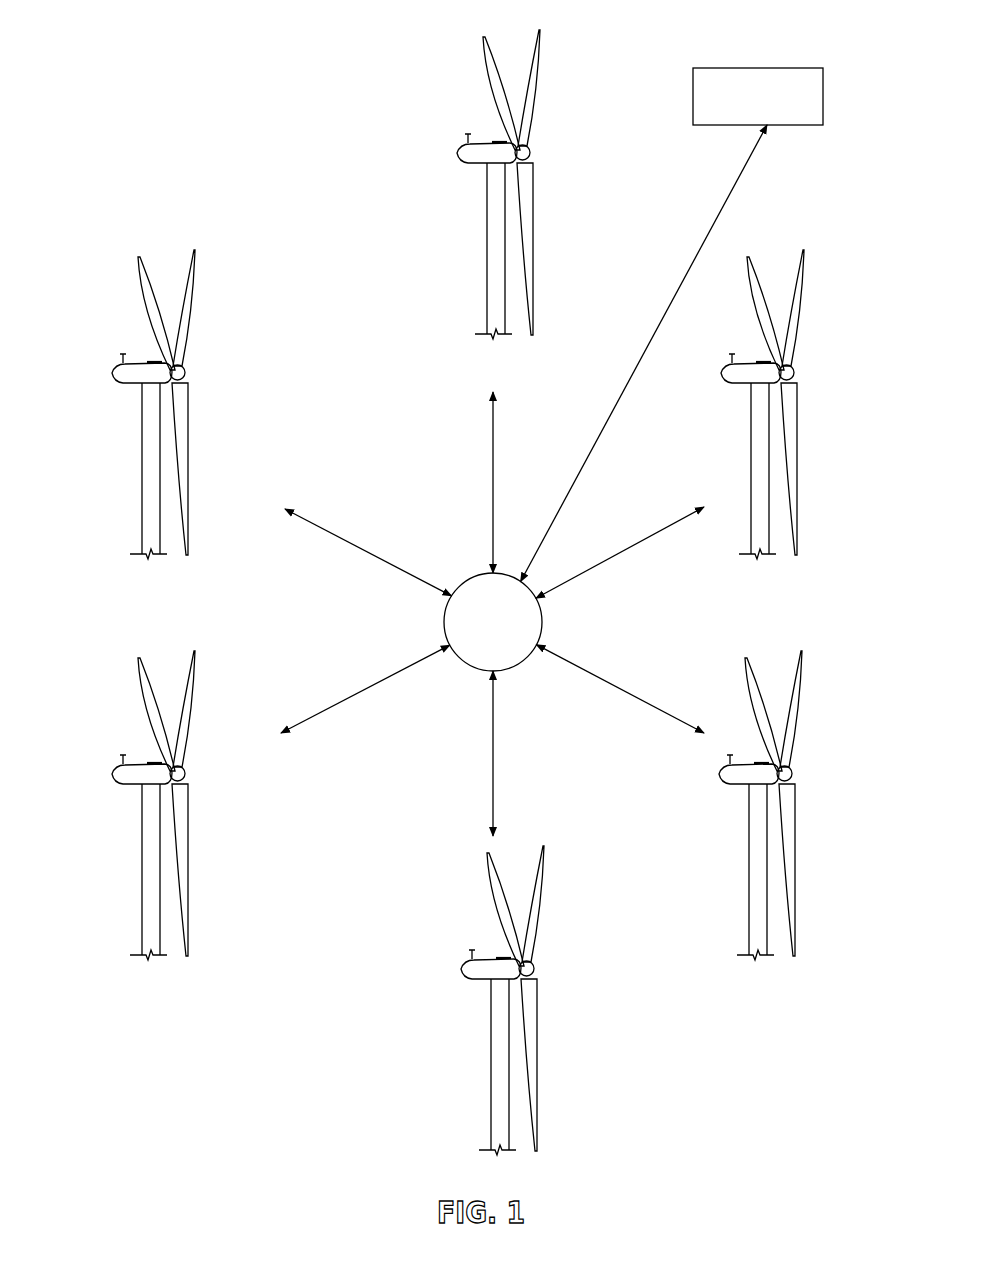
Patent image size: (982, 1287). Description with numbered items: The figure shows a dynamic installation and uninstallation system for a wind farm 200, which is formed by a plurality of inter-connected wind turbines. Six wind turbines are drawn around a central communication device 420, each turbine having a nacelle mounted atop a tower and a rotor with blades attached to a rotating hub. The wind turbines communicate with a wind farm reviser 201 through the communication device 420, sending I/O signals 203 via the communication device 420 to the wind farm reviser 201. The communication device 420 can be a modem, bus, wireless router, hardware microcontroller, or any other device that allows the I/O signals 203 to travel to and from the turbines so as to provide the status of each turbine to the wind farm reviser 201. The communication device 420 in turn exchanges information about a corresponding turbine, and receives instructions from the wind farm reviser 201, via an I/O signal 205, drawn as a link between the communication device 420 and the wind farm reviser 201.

The wind farm 200 is at (222, 98).
The wind farm reviser 201 is at (740, 102).
The I/O signal 203 is at (494, 503).
The I/O signal 205 is at (727, 203).
The communication device 420 is at (473, 626).